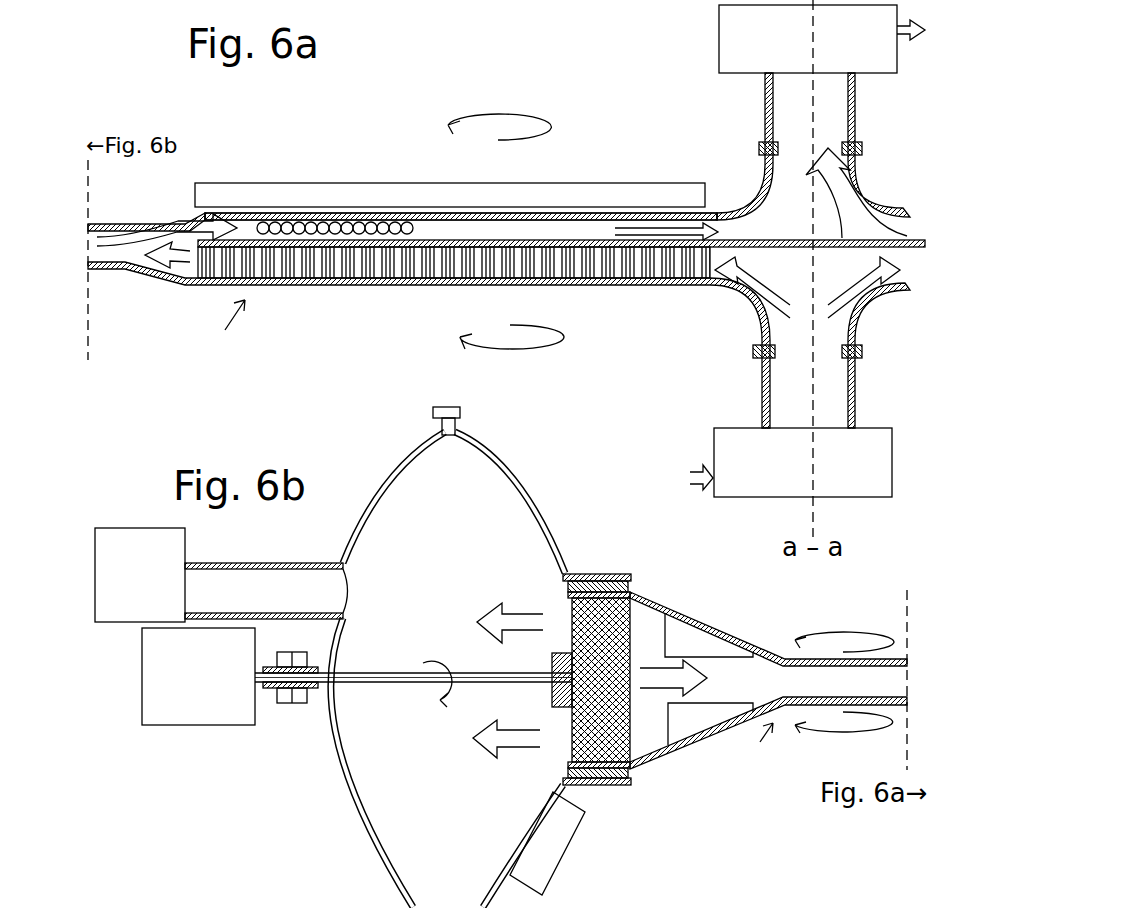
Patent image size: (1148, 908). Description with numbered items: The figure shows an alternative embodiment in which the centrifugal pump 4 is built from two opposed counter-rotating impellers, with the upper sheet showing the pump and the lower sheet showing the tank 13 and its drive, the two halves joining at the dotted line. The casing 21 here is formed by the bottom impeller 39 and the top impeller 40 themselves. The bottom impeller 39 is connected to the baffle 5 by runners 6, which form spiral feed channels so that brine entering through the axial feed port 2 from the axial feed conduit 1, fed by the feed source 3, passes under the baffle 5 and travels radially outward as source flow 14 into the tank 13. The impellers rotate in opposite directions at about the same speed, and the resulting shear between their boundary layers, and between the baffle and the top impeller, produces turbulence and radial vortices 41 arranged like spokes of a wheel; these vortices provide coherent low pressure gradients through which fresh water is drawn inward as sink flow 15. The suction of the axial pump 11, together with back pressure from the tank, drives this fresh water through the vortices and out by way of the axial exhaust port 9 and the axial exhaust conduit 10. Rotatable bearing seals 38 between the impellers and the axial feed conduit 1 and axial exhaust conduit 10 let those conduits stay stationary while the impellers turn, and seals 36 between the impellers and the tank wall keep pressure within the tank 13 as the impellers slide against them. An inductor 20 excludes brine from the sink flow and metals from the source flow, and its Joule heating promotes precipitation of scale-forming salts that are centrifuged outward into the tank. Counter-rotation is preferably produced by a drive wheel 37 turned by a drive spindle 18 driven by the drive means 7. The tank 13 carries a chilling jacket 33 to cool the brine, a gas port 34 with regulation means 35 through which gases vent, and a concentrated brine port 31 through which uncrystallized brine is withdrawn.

In FIG. 6A, the axial feed conduit 1 is at (762, 395).
In FIG. 6A, the axial feed port 2 is at (788, 289).
In FIG. 6A, the feed source 3 is at (714, 458).
In FIG. 6A, the centrifugal pump 4 is at (225, 331).
In FIG. 6B, the centrifugal pump 4 is at (759, 746).
In FIG. 6A, the baffle 5 is at (382, 242).
In FIG. 6A, the runners 6 is at (485, 260).
In FIG. 6B, the runners 6 is at (707, 713).
In FIG. 6B, the drive means 7 is at (198, 676).
In FIG. 6A, the axial exhaust port 9 is at (790, 217).
In FIG. 6A, the axial exhaust conduit 10 is at (765, 104).
In FIG. 6A, the axial pump 11 is at (719, 47).
In FIG. 6B, the tank 13 is at (458, 788).
In FIG. 6A, the source flow 14 is at (163, 262).
In FIG. 6B, the source flow 14 is at (508, 681).
In FIG. 6A, the sink flow 15 is at (182, 212).
In FIG. 6B, the sink flow 15 is at (672, 687).
In FIG. 6B, the drive spindle for centrifugal pump 18 is at (405, 683).
In FIG. 6A, the inductor 20 is at (313, 183).
In FIG. 6A, the casing 21 is at (278, 212).
In FIG. 6B, the concentrated brine port 31 is at (219, 575).
In FIG. 6B, the chilling jacket 33 is at (560, 860).
In FIG. 6B, the gas port 34 is at (440, 424).
In FIG. 6B, the regulation means for gas port 35 is at (462, 413).
In FIG. 6B, the rotatable bearing seal 36 is at (630, 578).
In FIG. 6B, the drive wheel 37 is at (628, 653).
In FIG. 6A, the rotatable bearing seal 38 is at (757, 146).
In FIG. 6A, the bottom impeller 39 is at (297, 285).
In FIG. 6B, the bottom impeller 39 is at (710, 740).
In FIG. 6A, the top impeller 40 is at (461, 216).
In FIG. 6B, the top impeller 40 is at (707, 643).
In FIG. 6A, the radial vortex 41 is at (363, 227).